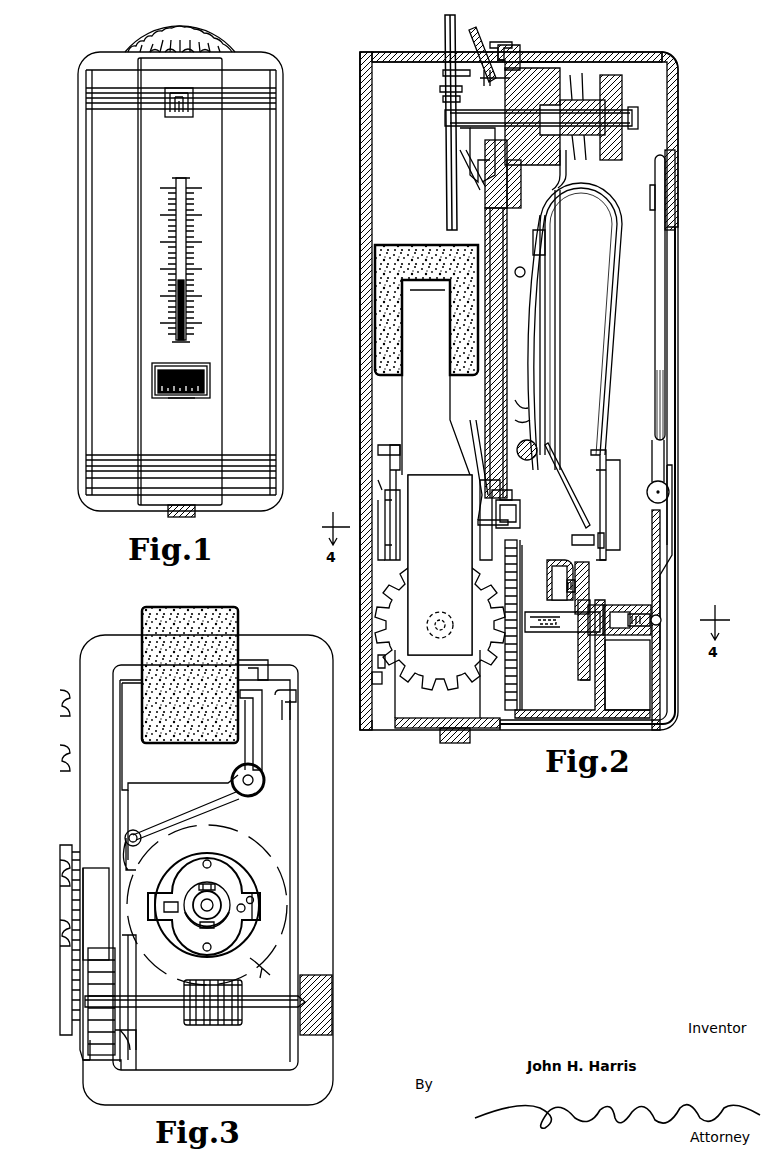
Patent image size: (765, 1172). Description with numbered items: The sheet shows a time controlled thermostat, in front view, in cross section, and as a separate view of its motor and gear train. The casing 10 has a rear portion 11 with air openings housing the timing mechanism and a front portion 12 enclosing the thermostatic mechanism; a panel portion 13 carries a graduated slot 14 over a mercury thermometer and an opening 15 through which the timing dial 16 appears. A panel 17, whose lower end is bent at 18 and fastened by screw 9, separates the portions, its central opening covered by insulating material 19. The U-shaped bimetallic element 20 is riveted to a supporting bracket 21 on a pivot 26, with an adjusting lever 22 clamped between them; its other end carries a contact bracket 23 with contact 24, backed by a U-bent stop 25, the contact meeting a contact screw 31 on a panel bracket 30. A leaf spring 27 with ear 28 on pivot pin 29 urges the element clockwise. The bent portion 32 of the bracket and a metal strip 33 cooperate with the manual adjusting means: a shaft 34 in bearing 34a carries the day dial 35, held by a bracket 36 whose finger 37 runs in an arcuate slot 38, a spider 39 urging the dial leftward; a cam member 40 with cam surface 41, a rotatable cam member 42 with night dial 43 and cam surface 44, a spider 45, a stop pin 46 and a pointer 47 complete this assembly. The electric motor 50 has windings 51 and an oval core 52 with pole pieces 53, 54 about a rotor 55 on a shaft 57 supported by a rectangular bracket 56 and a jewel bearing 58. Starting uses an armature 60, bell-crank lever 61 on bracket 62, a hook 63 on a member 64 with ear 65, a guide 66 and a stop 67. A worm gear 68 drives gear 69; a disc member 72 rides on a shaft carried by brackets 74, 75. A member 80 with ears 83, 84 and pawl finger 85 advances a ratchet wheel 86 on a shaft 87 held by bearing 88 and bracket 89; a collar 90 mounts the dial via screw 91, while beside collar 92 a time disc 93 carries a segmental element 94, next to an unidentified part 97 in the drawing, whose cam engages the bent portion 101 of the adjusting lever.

In FIG. 2, the screw 9 is at (440, 745).
In FIG. 1, the casing 10 is at (78, 300).
In FIG. 2, the rear portion 11 is at (360, 145).
In FIG. 2, the front portion 12 is at (592, 64).
In FIG. 1, the panel portion 13 is at (137, 165).
In FIG. 2, the panel portion 13 is at (676, 214).
In FIG. 1, the slot 14 is at (176, 178).
In FIG. 2, the slot 14 is at (666, 262).
In FIG. 1, the opening 15 is at (173, 398).
In FIG. 2, the opening 15 is at (676, 526).
In FIG. 1, the timing dial 16 is at (152, 380).
In FIG. 2, the timing dial 16 is at (650, 518).
In FIG. 2, the panel 17 is at (481, 198).
In FIG. 2, the bent portion 18 is at (408, 728).
In FIG. 2, the insulating material 19 is at (485, 406).
In FIG. 2, the bimetallic element 20 is at (592, 205).
In FIG. 2, the supporting bracket 21 is at (560, 335).
In FIG. 2, the adjusting lever 22 is at (502, 538).
In FIG. 2, the contact bracket 23 is at (598, 500).
In FIG. 2, the electrical contact 24 is at (605, 520).
In FIG. 2, the backing member 25 is at (640, 498).
In FIG. 2, the pivot 26 is at (560, 440).
In FIG. 2, the leaf spring 27 is at (537, 318).
In FIG. 2, the ear 28 is at (548, 246).
In FIG. 2, the pivot pin 29 is at (526, 272).
In FIG. 2, the contact bracket 30 is at (556, 455).
In FIG. 2, the contact screw 31 is at (570, 535).
In FIG. 2, the bent portion 32 is at (569, 170).
In FIG. 2, the metal strip 33 is at (518, 184).
In FIG. 2, the shaft 34 is at (445, 122).
In FIG. 2, the bearing 34a is at (485, 73).
In FIG. 1, the day dial 35 is at (166, 30).
In FIG. 2, the day dial 35 is at (444, 24).
In FIG. 2, the bracket 36 is at (474, 172).
In FIG. 2, the finger 37 is at (440, 88).
In FIG. 2, the arcuate slot 38 is at (443, 99).
In FIG. 2, the spider 39 is at (443, 73).
In FIG. 2, the cam member 40 is at (624, 84).
In FIG. 2, the cam surface 41 is at (598, 90).
In FIG. 2, the rotatable cam member 42 is at (532, 62).
In FIG. 1, the night dial 43 is at (210, 44).
In FIG. 2, the night dial 43 is at (514, 44).
In FIG. 2, the cam surface 44 is at (560, 90).
In FIG. 2, the spider 45 is at (470, 165).
In FIG. 2, the stop pin 46 is at (472, 42).
In FIG. 2, the pointer 47 is at (500, 42).
In FIG. 3, the electric motor 50 is at (78, 646).
In FIG. 2, the electric motor 50 is at (392, 390).
In FIG. 3, the windings 51 is at (196, 607).
In FIG. 2, the windings 51 is at (395, 248).
In FIG. 3, the core 52 is at (321, 788).
In FIG. 2, the core 52 is at (436, 378).
In FIG. 3, the pole piece 53 is at (100, 1070).
In FIG. 2, the pole piece 53 is at (448, 710).
In FIG. 3, the pole piece 54 is at (106, 926).
In FIG. 3, the rotor 55 is at (115, 1022).
In FIG. 2, the rotor 55 is at (400, 576).
In FIG. 3, the rectangular bracket 56 is at (66, 952).
In FIG. 2, the rectangular bracket 56 is at (448, 552).
In FIG. 3, the shaft 57 is at (172, 1020).
In FIG. 3, the needle point jewel bearing 58 is at (296, 1015).
In FIG. 3, the armature 60 is at (248, 676).
In FIG. 3, the bell-crank lever 61 is at (218, 800).
In FIG. 2, the bell-crank lever 61 is at (388, 435).
In FIG. 3, the bracket 62 is at (168, 786).
In FIG. 3, the hook 63 is at (130, 832).
In FIG. 2, the hook 63 is at (400, 446).
In FIG. 3, the member 64 is at (136, 974).
In FIG. 2, the member 64 is at (389, 520).
In FIG. 3, the ear 65 is at (136, 1040).
In FIG. 2, the ear 65 is at (388, 606).
In FIG. 2, the guide 66 is at (384, 684).
In FIG. 3, the stop 67 is at (285, 710).
In FIG. 3, the worm gear 68 is at (218, 1025).
In FIG. 3, the gear 69 is at (268, 969).
In FIG. 3, the disc member 72 is at (224, 870).
In FIG. 3, the bracket 74 is at (292, 875).
In FIG. 2, the bracket 74 is at (400, 496).
In FIG. 2, the metal bracket 75 is at (510, 520).
In FIG. 3, the member 80 is at (246, 925).
In FIG. 2, the member 80 is at (482, 468).
In FIG. 3, the ear 83 is at (200, 886).
In FIG. 3, the ear 84 is at (212, 928).
In FIG. 3, the finger 85 is at (176, 915).
In FIG. 2, the finger 85 is at (517, 530).
In FIG. 2, the ratchet wheel 86 is at (522, 660).
In FIG. 2, the shaft 87 is at (560, 620).
In FIG. 2, the bearing 88 is at (518, 600).
In FIG. 2, the bracket 89 is at (606, 672).
In FIG. 2, the collar 90 is at (636, 605).
In FIG. 2, the screw 91 is at (660, 616).
In FIG. 2, the collar 92 is at (608, 605).
In FIG. 2, the time disc 93 is at (582, 684).
In FIG. 2, the segmental element 94 is at (556, 560).
In FIG. 2, the spring 97 is at (595, 588).
In FIG. 2, the angular portion 101 is at (547, 632).